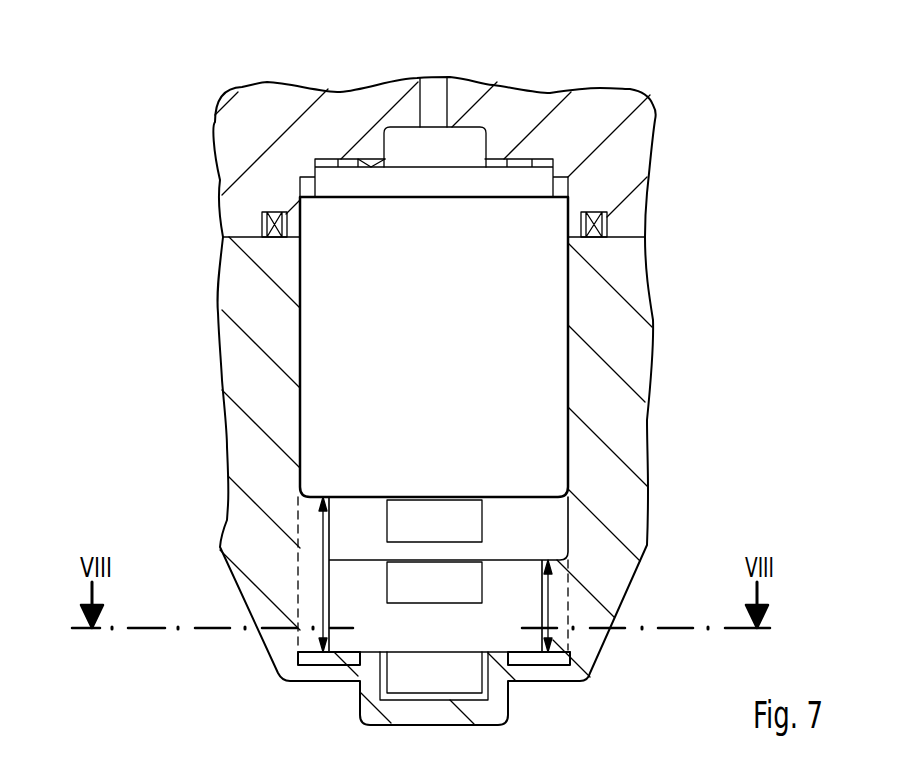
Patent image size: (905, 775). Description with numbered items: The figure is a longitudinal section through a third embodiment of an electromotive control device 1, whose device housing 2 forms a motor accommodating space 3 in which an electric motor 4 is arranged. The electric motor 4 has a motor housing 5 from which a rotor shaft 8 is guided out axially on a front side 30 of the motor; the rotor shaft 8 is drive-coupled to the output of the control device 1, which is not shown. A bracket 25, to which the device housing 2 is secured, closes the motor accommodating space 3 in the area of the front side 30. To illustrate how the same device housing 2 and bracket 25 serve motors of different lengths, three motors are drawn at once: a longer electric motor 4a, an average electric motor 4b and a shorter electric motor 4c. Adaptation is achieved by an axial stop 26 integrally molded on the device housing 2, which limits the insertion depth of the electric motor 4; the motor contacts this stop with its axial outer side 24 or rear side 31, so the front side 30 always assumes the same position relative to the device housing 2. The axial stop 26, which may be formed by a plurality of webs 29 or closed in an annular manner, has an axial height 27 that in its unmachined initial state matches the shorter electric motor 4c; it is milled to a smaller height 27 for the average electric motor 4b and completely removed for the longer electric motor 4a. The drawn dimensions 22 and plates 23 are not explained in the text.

The control device 1 is at (747, 153).
The device housing 2 is at (643, 341).
The motor accommodating space 3 is at (567, 398).
The electric motor 4 is at (434, 600).
The longer electric motor 4a is at (458, 687).
The average electric motor 4b is at (459, 594).
The shorter electric motor 4c is at (459, 532).
The motor housing 5 is at (313, 383).
The rotor shaft 8 is at (435, 98).
The axial gap 22 is at (433, 574).
The support plate 23 is at (493, 645).
The axial outer side 24 is at (429, 594).
The bracket 25 is at (263, 122).
The axial stop 26 is at (418, 573).
The axial height 27 is at (322, 615).
The webs 29 is at (313, 527).
The front side 30 is at (373, 160).
The rear side 31 is at (514, 500).